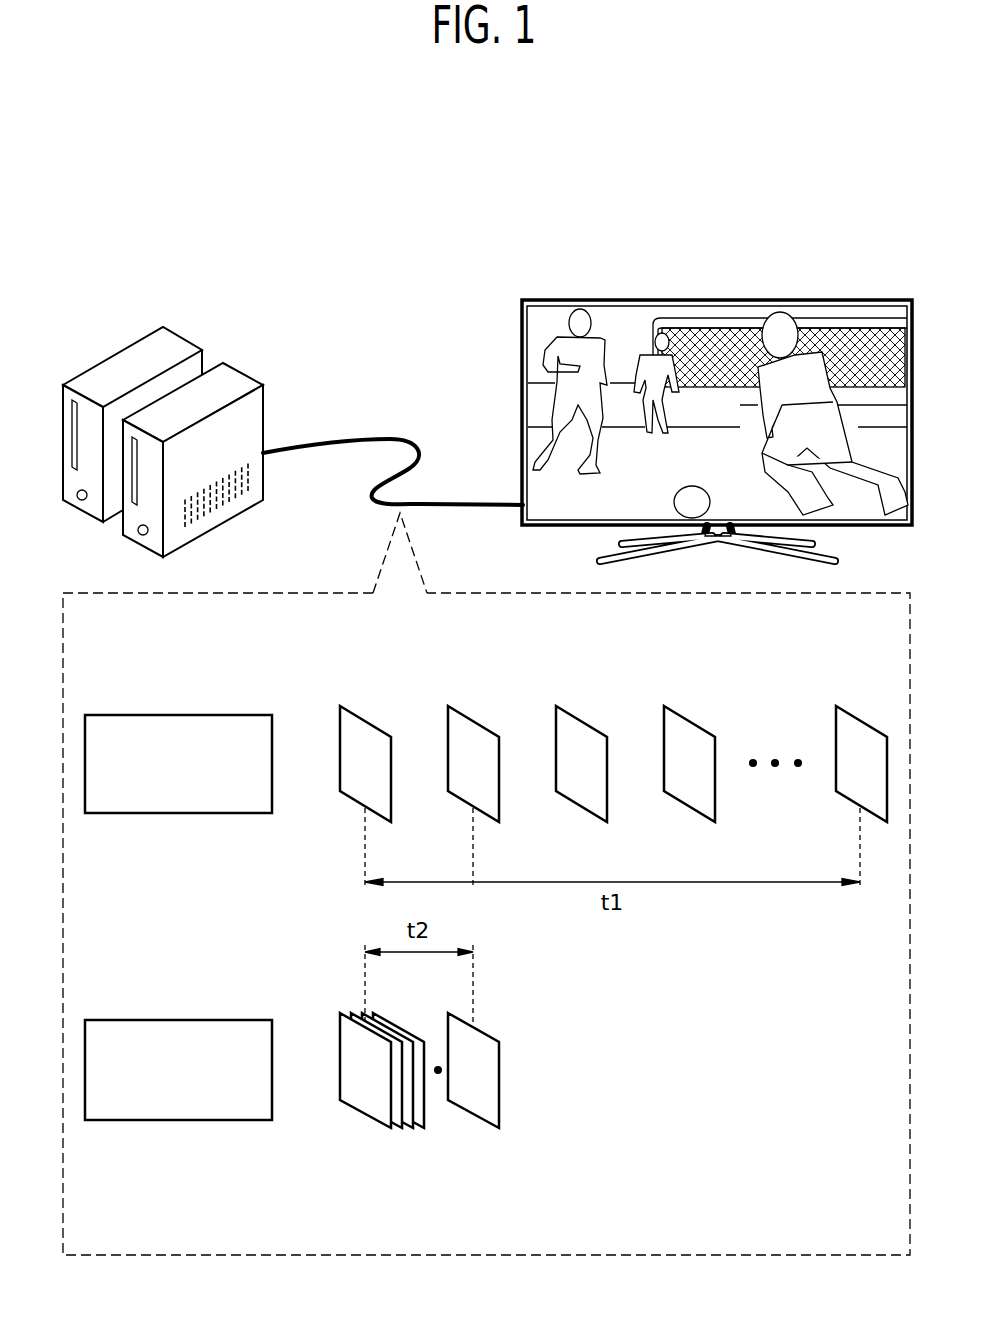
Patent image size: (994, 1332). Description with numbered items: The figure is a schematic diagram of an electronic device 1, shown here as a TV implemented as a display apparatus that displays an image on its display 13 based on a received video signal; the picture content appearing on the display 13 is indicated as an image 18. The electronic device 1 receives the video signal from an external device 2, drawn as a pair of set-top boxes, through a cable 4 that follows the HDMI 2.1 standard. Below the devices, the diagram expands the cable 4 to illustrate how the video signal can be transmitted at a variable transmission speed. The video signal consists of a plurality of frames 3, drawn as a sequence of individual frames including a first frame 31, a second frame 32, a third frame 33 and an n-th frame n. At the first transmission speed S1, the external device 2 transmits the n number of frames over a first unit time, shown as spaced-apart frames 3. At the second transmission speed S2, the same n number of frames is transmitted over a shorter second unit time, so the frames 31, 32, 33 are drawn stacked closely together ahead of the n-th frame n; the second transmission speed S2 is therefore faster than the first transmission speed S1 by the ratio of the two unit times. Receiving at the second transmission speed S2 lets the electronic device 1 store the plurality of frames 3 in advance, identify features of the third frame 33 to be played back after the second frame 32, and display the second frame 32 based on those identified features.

The electronic device 1 is at (613, 300).
The external device 2 is at (162, 327).
The plurality of frames 3 is at (853, 643).
The cable 4 is at (385, 438).
The display 13 is at (703, 300).
The image displayed on the display 18 is at (840, 318).
The first frame 31 is at (363, 717).
The second frame 32 is at (472, 717).
The third frame 33 is at (580, 717).
The n number of frames n is at (858, 717).
The first transmission speed S1 is at (177, 713).
The second transmission speed S2 is at (177, 1020).